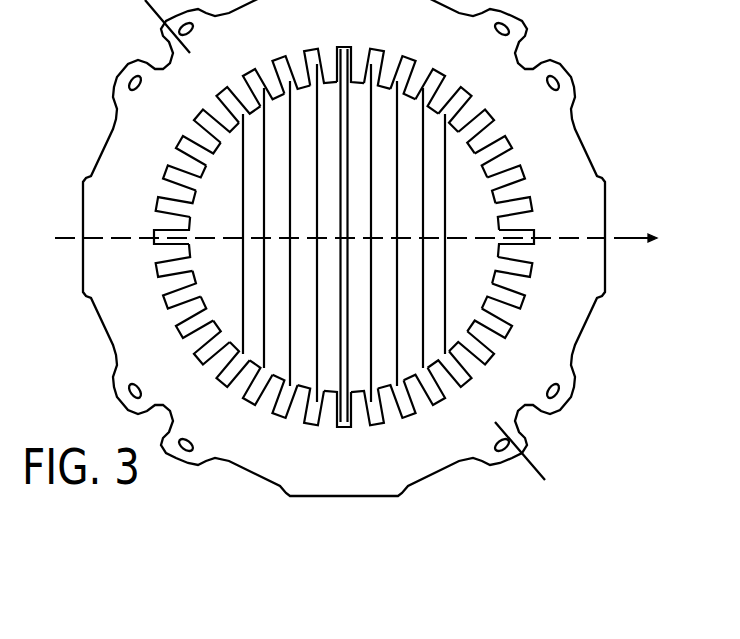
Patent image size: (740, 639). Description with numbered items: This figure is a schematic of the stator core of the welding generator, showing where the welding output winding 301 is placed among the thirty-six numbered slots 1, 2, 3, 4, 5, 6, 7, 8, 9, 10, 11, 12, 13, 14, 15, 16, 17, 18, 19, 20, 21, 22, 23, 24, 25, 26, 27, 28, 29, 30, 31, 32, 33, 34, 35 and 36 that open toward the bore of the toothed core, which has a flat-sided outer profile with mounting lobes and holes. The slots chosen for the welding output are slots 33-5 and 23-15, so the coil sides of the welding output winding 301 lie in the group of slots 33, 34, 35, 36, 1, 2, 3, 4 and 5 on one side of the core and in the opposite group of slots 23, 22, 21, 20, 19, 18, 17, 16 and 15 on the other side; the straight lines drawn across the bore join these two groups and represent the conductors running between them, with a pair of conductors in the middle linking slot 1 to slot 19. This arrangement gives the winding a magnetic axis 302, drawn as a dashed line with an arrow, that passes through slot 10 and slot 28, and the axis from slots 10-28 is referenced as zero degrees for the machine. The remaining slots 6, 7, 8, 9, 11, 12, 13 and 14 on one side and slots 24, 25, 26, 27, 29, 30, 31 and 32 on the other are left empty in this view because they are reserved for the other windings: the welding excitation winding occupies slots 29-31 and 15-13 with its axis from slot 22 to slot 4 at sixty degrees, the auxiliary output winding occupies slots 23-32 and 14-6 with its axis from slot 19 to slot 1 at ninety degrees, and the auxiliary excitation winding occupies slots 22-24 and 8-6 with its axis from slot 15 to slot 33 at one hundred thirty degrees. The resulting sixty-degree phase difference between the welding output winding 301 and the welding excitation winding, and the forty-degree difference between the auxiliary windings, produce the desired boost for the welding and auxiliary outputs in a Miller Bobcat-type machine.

The slot 1 is at (350, 46).
The slot 2 is at (380, 50).
The slot 3 is at (409, 60).
The slot 4 is at (437, 76).
The slot 5 is at (464, 95).
The slot 6 is at (486, 119).
The slot 7 is at (506, 146).
The slot 8 is at (519, 176).
The slot 9 is at (528, 208).
The slot 10 is at (536, 240).
The slot 11 is at (531, 273).
The slot 12 is at (521, 303).
The slot 13 is at (505, 332).
The slot 14 is at (486, 359).
The slot 15 is at (462, 382).
The slot 16 is at (435, 401).
The slot 17 is at (405, 415).
The slot 18 is at (373, 424).
The slot 19 is at (341, 428).
The slot 20 is at (307, 423).
The slot 21 is at (276, 413).
The slot 22 is at (247, 398).
The slot 23 is at (220, 378).
The slot 24 is at (197, 354).
The slot 25 is at (178, 327).
The slot 26 is at (164, 297).
The slot 27 is at (155, 265).
The slot 28 is at (152, 233).
The slot 29 is at (156, 200).
The slot 30 is at (166, 170).
The slot 31 is at (181, 141).
The slot 32 is at (201, 114).
The slot 33 is at (225, 91).
The slot 34 is at (252, 72).
The slot 35 is at (282, 58).
The slot 36 is at (314, 49).
The coil side conductor 301 is at (445, 315).
The magnetic axis 302 is at (614, 237).